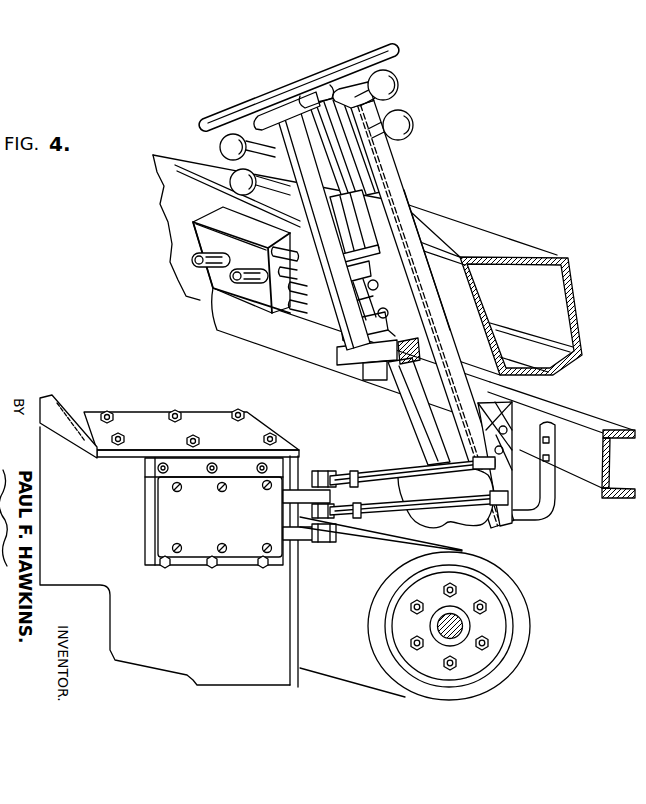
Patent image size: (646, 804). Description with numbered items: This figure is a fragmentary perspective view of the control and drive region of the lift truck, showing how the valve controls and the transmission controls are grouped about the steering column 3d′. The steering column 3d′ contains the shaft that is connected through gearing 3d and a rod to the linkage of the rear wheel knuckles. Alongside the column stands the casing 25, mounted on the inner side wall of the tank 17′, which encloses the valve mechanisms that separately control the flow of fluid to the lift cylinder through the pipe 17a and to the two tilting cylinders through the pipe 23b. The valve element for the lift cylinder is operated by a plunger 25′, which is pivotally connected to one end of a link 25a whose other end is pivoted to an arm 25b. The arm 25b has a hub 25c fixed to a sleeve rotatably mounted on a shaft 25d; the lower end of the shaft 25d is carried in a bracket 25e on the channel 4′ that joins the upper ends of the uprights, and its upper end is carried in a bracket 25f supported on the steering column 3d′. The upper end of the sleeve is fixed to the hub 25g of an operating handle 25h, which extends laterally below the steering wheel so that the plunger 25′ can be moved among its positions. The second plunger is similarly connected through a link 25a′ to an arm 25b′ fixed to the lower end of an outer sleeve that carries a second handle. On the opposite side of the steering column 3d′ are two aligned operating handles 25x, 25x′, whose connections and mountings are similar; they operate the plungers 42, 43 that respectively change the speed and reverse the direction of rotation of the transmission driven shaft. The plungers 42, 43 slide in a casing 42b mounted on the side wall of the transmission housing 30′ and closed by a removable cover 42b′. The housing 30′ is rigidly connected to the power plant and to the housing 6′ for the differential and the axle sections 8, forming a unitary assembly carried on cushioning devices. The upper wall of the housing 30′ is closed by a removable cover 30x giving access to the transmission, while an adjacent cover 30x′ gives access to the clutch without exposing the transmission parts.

The operating handle 25x′ is at (399, 87).
The operating handle 25x is at (414, 125).
The operating handle 25h is at (220, 145).
The bracket 25f is at (372, 158).
The steering column 3d′ is at (404, 190).
The hub of operating handle 25g is at (237, 196).
The casing 25 is at (214, 219).
The plunger 25′ is at (298, 318).
The tank 17′ is at (487, 233).
The pipe 23b is at (194, 266).
The pipe 17a is at (214, 296).
The link 25a′ is at (378, 286).
The arm 25b′ is at (388, 314).
The link 25a is at (335, 332).
The arm 25b is at (345, 348).
The hub 25c is at (355, 350).
The bracket 25e is at (366, 362).
The shaft 25d is at (398, 362).
The channel 4′ is at (596, 420).
The removable cover 30x′ is at (66, 405).
The removable cover 30x is at (206, 411).
The casing 42b is at (146, 505).
The removable cover 42b′ is at (192, 557).
The plunger 42 is at (320, 476).
The gearing 3d is at (415, 486).
The plunger 43 is at (318, 543).
The transmission housing 30′ is at (226, 624).
The axle sections 8 is at (465, 624).
The housing 6′ is at (460, 626).